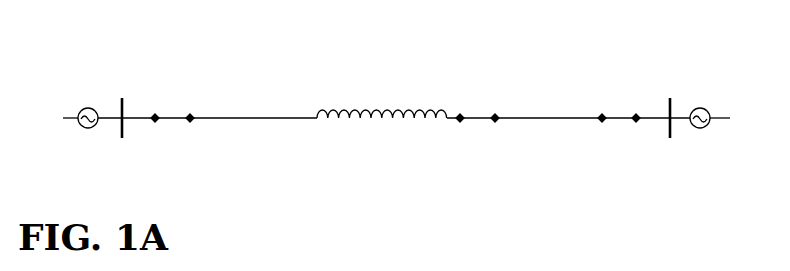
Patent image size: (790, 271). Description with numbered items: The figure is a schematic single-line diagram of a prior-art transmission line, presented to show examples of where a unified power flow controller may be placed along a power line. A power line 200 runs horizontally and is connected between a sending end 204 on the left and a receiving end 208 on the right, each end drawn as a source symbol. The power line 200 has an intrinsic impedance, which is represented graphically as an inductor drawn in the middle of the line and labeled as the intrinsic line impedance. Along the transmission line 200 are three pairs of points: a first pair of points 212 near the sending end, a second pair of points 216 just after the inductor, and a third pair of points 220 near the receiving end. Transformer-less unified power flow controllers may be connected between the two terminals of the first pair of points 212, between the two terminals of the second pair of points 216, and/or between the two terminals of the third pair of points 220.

The power line 200 is at (378, 45).
The sending end 204 is at (80, 135).
The receiving end 208 is at (712, 130).
The pair of points a1/a2 212 is at (172, 158).
The pair of points b1/b2 216 is at (478, 158).
The pair of points c1/c2 220 is at (620, 158).